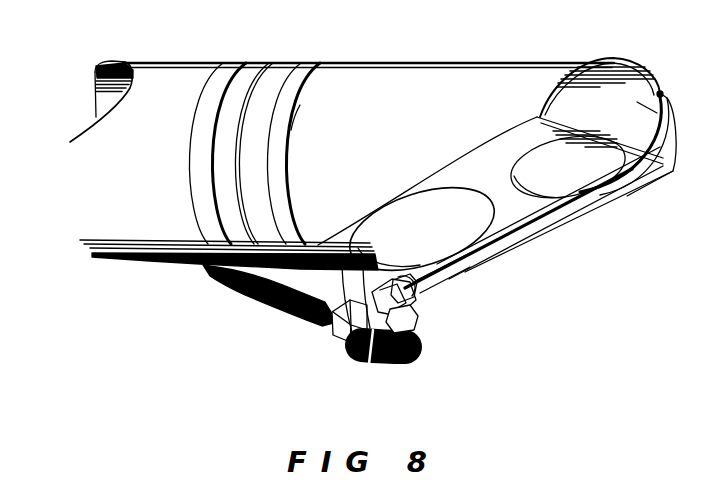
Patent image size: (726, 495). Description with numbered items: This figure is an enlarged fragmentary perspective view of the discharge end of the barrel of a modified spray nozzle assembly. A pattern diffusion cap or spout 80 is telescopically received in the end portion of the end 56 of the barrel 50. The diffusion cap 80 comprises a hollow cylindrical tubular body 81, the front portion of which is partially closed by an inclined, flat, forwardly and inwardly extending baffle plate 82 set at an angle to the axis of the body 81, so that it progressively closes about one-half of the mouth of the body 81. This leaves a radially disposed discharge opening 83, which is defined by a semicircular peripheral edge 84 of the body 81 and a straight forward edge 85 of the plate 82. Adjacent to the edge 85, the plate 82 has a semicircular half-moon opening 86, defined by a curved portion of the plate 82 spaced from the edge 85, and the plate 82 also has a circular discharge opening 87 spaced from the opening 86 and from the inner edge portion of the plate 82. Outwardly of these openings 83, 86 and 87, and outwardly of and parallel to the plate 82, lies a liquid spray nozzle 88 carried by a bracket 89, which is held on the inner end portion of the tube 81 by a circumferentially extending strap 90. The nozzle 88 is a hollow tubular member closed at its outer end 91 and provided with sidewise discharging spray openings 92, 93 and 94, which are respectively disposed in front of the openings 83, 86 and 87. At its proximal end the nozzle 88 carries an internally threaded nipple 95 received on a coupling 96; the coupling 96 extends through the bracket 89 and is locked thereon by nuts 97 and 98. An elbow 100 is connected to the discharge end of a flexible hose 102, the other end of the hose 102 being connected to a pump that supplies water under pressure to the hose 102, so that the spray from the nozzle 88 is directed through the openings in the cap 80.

The barrel 50 is at (203, 64).
The end of barrel 56 is at (348, 66).
The pattern diffusion cap 80 is at (442, 62).
The hollow cylindrical tubular body 81 is at (503, 73).
The baffle plate 82 is at (434, 158).
The discharge opening 83 is at (594, 98).
The semicircular peripheral edge 84 is at (674, 116).
The straight forward edge 85 is at (583, 124).
The semicircular half-moon opening 86 is at (527, 160).
The circular discharge opening 87 is at (393, 216).
The liquid spray nozzle 88 is at (563, 207).
The bracket 89 is at (363, 355).
The circumferentially extending strap 90 is at (300, 117).
The outer end of nozzle 91 is at (662, 93).
The spray opening 92 is at (676, 134).
The spray opening 93 is at (603, 180).
The spray opening 94 is at (482, 248).
The internally threaded nipple 95 is at (476, 249).
The coupling 96 is at (371, 278).
The nut 97 is at (403, 317).
The nut 98 is at (330, 325).
The elbow 100 is at (338, 332).
The flexible hose 102 is at (225, 288).